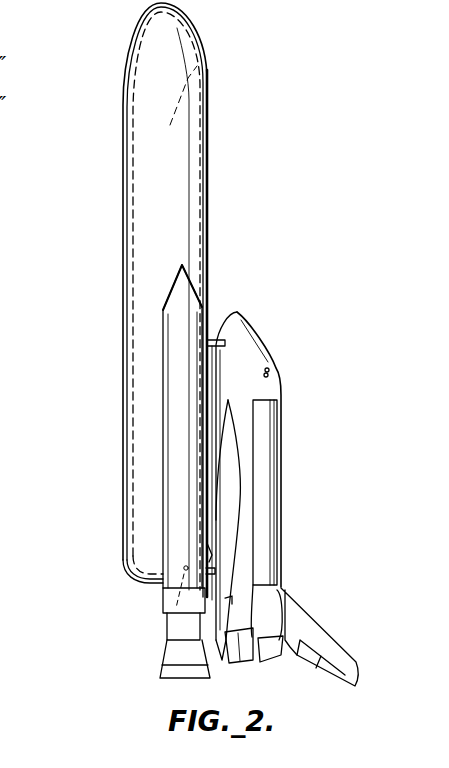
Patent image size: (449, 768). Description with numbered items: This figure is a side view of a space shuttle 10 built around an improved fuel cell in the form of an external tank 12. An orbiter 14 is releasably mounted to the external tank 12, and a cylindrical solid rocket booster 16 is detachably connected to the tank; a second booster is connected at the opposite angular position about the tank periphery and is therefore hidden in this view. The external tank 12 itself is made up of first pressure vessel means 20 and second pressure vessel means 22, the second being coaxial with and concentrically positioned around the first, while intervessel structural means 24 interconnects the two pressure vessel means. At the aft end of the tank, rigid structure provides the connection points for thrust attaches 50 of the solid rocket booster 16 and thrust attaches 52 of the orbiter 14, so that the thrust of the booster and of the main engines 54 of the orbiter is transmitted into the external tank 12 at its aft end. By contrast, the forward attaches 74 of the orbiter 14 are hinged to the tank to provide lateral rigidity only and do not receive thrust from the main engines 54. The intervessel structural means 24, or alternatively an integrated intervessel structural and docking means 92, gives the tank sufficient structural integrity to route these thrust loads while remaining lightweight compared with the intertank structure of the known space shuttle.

The space shuttle 10 is at (315, 510).
The external tank 12 is at (210, 110).
The orbiter 14 is at (281, 396).
The solid rocket booster 16 is at (178, 378).
The first pressure vessel means 20 is at (207, 67).
The second pressure vessel means 22 is at (210, 158).
The intervessel structural means 24 is at (140, 594).
The thrust attaches 50 is at (167, 612).
The thrust attaches 52 is at (207, 544).
The main engines 54 is at (241, 662).
The forward attaches 74 is at (217, 338).
The integrated intervessel structural and docking means 92 is at (145, 569).